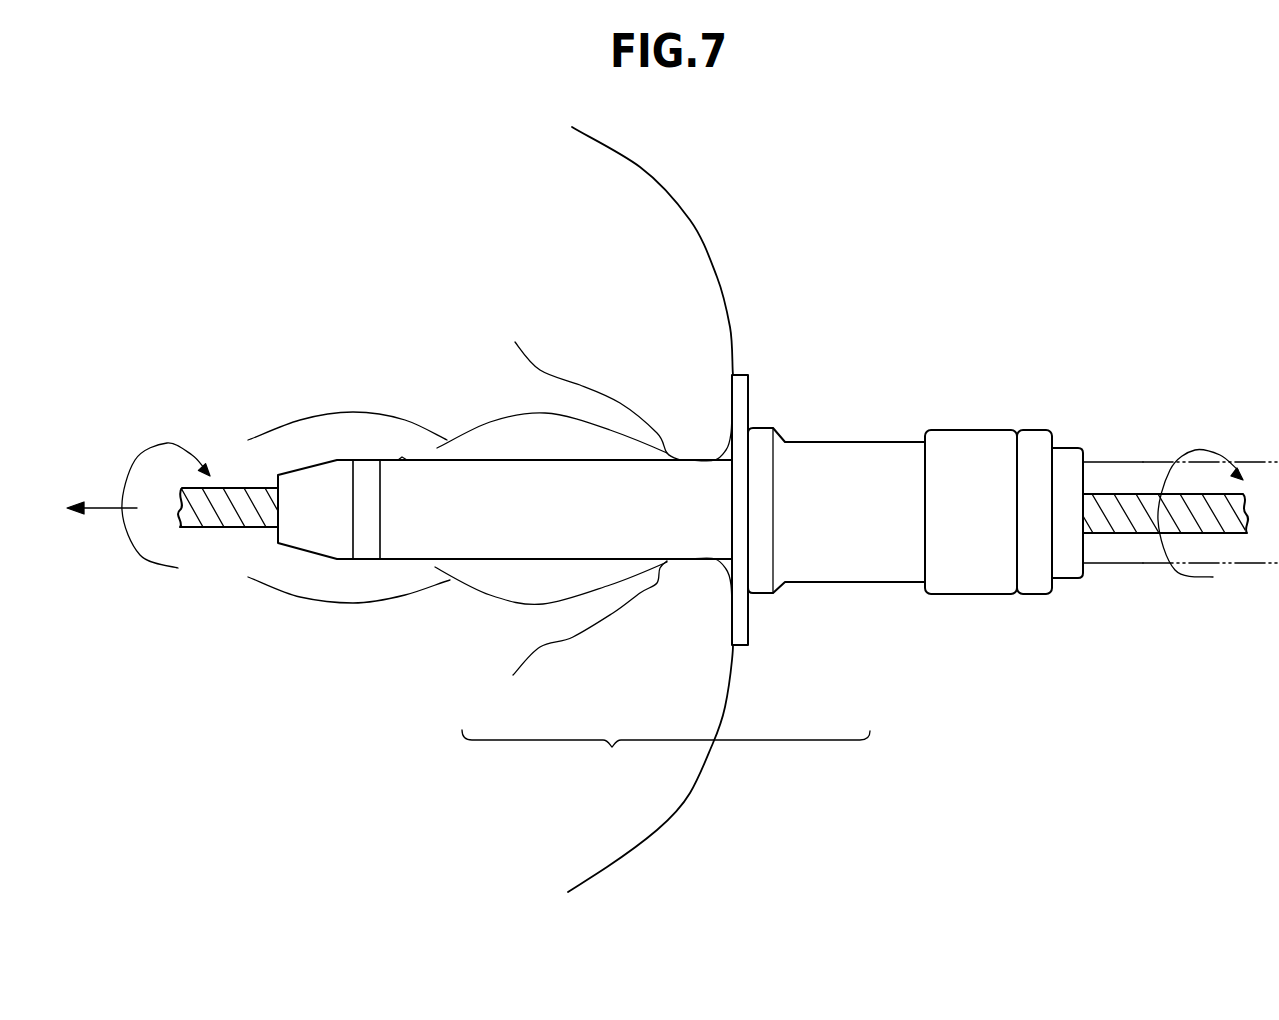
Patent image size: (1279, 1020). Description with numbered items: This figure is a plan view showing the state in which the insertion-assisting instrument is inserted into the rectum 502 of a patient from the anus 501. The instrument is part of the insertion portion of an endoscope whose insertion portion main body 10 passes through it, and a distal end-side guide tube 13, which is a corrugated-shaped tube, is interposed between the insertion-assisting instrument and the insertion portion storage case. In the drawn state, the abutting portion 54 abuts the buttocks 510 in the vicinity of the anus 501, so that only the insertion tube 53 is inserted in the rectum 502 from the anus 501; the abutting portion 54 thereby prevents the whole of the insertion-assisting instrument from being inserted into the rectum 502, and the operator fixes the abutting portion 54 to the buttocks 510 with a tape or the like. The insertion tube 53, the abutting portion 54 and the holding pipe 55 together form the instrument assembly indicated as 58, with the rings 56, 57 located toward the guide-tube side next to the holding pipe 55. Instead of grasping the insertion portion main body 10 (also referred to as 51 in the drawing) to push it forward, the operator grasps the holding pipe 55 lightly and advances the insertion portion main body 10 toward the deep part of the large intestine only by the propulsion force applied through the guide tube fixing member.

The insertion portion main body 10 is at (177, 564).
The shaft (rotating body) 51 is at (207, 515).
The distal end-side guide tube 13 is at (1133, 563).
The insertion tube 53 is at (483, 540).
The abutting portion 54 is at (737, 608).
The holding pipe 55 is at (857, 563).
The first ring 56 is at (993, 562).
The second ring 57 is at (1042, 562).
The coupling assembly 58 is at (666, 756).
The anus 501 is at (698, 441).
The rectum 502 is at (349, 605).
The buttocks 510 is at (743, 358).